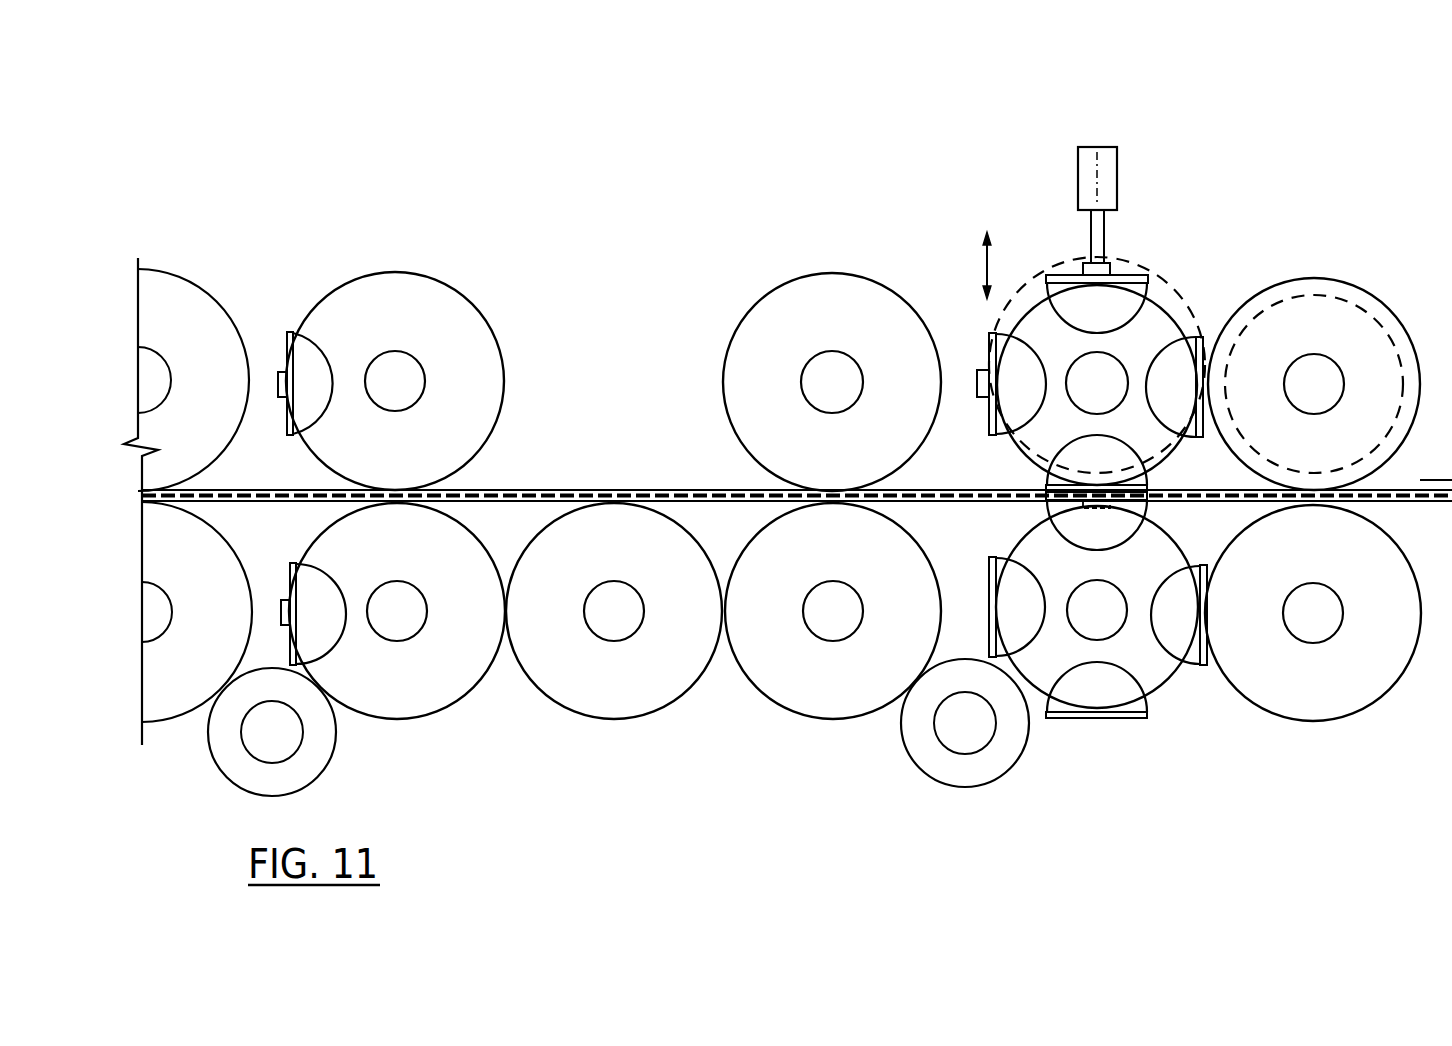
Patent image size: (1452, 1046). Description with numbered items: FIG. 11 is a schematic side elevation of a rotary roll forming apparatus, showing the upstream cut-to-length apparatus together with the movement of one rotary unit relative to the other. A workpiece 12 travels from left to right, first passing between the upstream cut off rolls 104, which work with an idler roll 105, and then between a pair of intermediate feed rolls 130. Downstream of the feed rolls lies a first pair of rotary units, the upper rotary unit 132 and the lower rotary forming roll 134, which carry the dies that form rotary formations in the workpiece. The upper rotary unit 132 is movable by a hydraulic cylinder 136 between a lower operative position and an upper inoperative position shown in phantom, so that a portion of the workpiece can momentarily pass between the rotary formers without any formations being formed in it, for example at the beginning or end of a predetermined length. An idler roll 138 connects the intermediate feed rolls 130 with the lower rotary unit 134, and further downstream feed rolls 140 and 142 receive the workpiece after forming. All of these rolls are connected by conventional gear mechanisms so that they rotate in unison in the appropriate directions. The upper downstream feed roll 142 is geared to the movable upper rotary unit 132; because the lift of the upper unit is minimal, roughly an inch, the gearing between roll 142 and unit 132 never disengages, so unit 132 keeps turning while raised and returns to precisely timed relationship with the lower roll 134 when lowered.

The web 12 is at (649, 490).
The upstream cut off rolls 104 is at (403, 290).
The idler roll 105 is at (582, 705).
The intermediate feed rolls 130 is at (823, 287).
The upper rotary unit 132 is at (1190, 258).
The lower rotary forming roll 134 is at (1186, 703).
The hydraulic cylinder 136 is at (1098, 150).
The idler roll 138 is at (1000, 750).
The downstream feed roll 140 is at (1327, 707).
The upper downstream feed roll 142 is at (1345, 287).